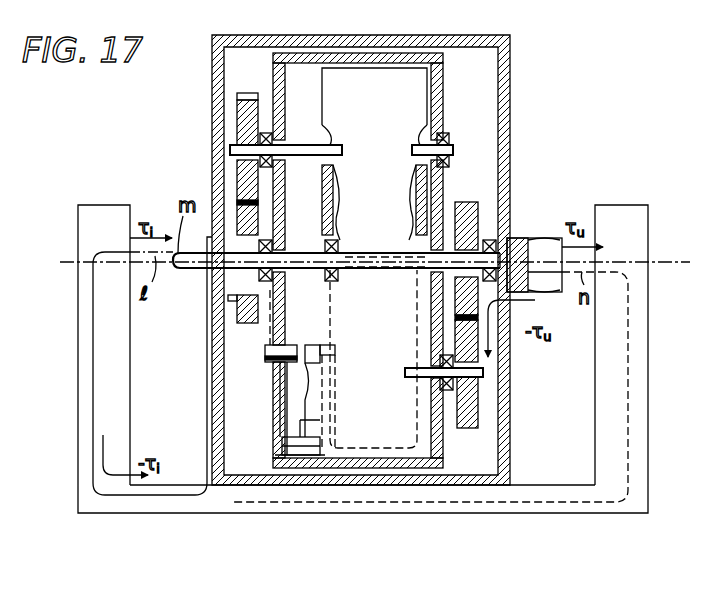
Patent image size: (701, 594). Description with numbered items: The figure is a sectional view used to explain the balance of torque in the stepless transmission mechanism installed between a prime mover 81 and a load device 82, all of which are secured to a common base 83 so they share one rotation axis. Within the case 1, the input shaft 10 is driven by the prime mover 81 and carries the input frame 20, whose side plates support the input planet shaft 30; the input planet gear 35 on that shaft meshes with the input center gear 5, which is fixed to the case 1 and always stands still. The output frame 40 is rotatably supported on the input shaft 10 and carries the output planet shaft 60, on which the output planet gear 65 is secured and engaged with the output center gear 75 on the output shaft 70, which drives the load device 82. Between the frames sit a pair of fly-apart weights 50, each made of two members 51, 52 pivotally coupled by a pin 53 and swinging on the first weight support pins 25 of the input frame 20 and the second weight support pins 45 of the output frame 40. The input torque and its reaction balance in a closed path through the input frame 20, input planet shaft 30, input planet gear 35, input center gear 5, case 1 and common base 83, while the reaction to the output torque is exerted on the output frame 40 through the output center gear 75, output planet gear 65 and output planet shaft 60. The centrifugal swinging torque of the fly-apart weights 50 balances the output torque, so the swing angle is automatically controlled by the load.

The case 1 is at (218, 370).
The input center gear 5 is at (245, 305).
The input shaft 10 is at (193, 270).
The input frame 20 is at (279, 53).
The first weight support pins 25 is at (280, 372).
The input planet shaft 30 is at (230, 150).
The input planet gear 35 is at (248, 93).
The output frame 40 is at (356, 80).
The second weight support pins 45 is at (335, 352).
The fly-apart weights 50 is at (298, 458).
The member 51 is at (285, 345).
The member 52 is at (312, 345).
The pin 53 is at (290, 440).
The output planet shaft 60 is at (485, 371).
The output planet gear 65 is at (478, 400).
The output shaft 70 is at (522, 238).
The output center gear 75 is at (470, 202).
The prime mover 81 is at (105, 212).
The load device 82 is at (617, 212).
The common base 83 is at (568, 492).